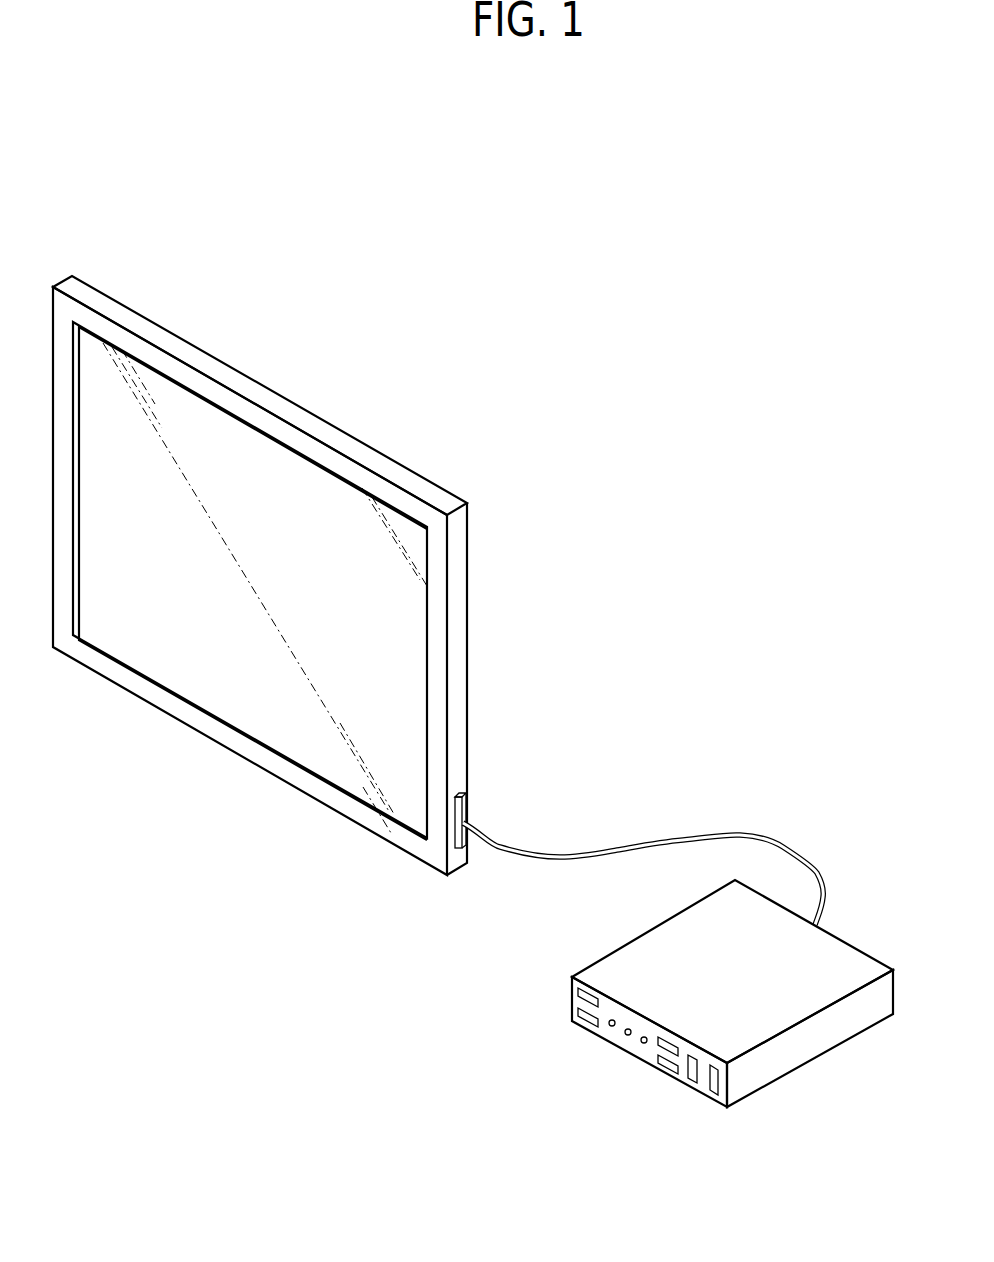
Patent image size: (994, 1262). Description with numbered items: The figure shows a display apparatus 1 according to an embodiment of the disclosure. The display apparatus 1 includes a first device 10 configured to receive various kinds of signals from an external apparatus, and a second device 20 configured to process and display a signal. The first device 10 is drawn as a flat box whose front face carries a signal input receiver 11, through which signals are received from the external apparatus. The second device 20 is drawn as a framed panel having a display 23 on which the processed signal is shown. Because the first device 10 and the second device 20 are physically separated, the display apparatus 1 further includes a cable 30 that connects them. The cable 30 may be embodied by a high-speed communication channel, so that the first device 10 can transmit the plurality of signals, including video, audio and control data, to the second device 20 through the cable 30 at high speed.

The display apparatus 1 is at (751, 407).
The second device 20 is at (165, 331).
The display 23 is at (300, 493).
The cable 30 is at (681, 838).
The first device 10 is at (808, 1056).
The signal input receiver 11 is at (688, 1072).